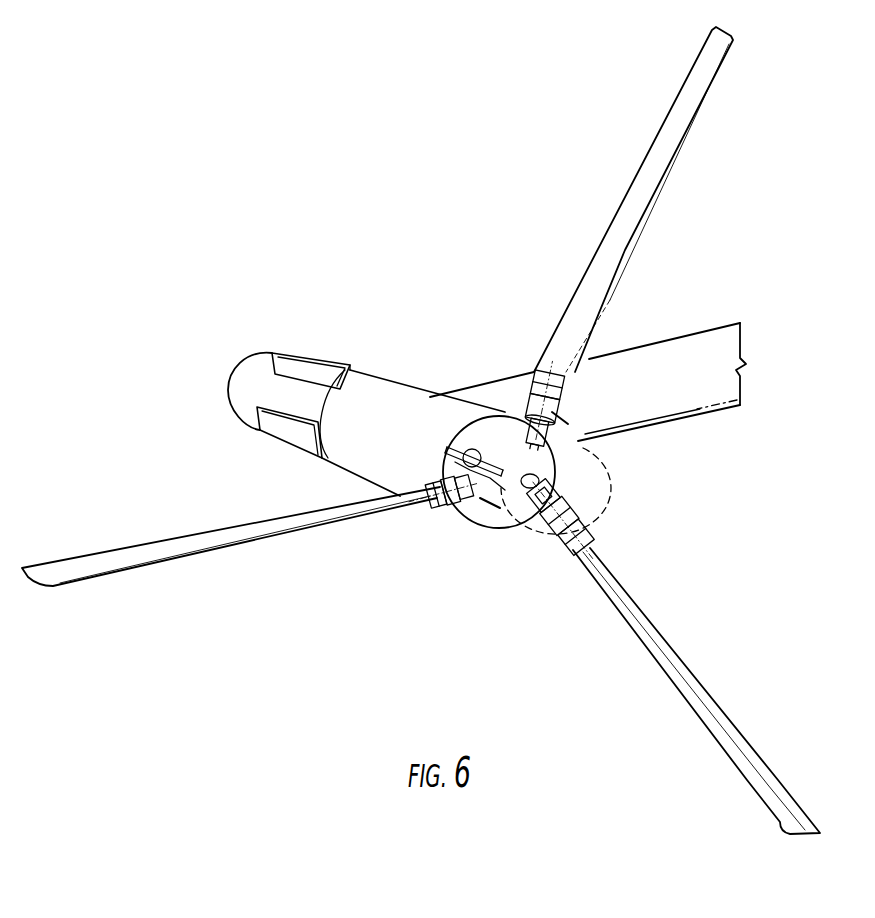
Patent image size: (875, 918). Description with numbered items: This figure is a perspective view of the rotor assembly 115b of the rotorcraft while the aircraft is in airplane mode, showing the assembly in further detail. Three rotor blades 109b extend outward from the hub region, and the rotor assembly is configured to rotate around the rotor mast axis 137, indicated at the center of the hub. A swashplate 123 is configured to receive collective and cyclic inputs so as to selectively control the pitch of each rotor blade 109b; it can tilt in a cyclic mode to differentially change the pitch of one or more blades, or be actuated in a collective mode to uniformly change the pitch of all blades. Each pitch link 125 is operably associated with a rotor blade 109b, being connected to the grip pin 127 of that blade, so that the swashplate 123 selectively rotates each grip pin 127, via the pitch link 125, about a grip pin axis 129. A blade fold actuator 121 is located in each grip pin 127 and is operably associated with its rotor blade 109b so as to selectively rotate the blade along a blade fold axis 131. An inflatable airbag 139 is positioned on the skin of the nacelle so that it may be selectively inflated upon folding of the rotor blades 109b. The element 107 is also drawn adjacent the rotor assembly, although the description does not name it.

The stabilizer fin 107 is at (647, 343).
The rotor blades 109b is at (637, 163).
The rotor assembly 115b is at (403, 602).
The blade fold actuator 121 is at (557, 436).
The swashplate 123 is at (462, 420).
The pitch link 125 is at (447, 447).
The grip pin 127 is at (523, 418).
The grip pin axis 129 is at (548, 347).
The blade fold axis 131 is at (567, 425).
The rotor mast axis 137 is at (600, 497).
The inflatable airbag 139 is at (229, 378).